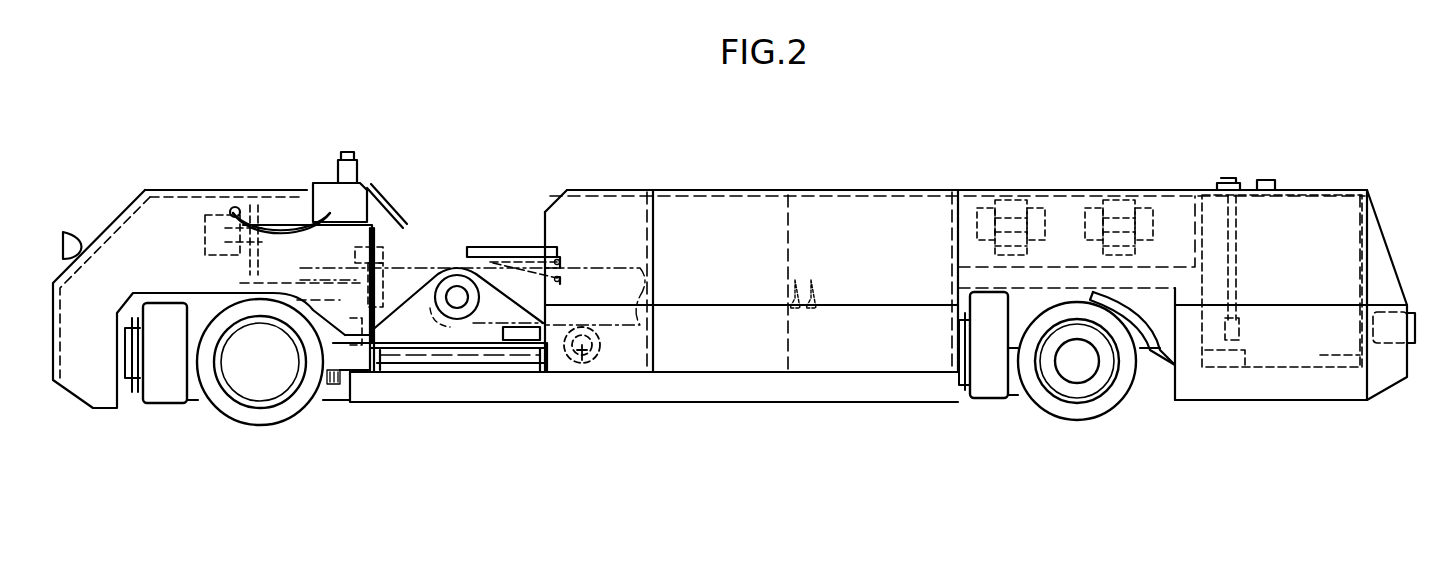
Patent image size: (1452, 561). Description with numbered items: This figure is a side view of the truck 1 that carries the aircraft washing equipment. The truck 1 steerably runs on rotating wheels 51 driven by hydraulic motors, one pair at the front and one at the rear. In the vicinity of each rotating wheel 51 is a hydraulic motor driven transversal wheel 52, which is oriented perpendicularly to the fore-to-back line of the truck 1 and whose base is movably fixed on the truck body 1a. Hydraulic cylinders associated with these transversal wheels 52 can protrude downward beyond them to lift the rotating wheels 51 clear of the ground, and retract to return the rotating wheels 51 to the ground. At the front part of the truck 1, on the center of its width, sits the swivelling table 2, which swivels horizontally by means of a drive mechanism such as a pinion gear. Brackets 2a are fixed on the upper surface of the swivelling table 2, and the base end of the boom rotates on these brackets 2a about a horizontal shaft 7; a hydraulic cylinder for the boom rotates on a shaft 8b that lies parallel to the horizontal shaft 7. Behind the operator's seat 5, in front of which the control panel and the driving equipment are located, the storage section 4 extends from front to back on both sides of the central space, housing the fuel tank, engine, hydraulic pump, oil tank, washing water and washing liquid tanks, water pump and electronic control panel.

The truck 1 is at (1258, 150).
The truck body 1a is at (900, 395).
The swivelling table 2 is at (413, 355).
The brackets 2a is at (417, 293).
The storage section 4 is at (275, 190).
The operator's seat 5 is at (505, 246).
The horizontal shaft 7 is at (457, 305).
The shaft 8b is at (578, 378).
The rotating wheels 51 is at (270, 424).
The transversal wheels 52 is at (170, 400).